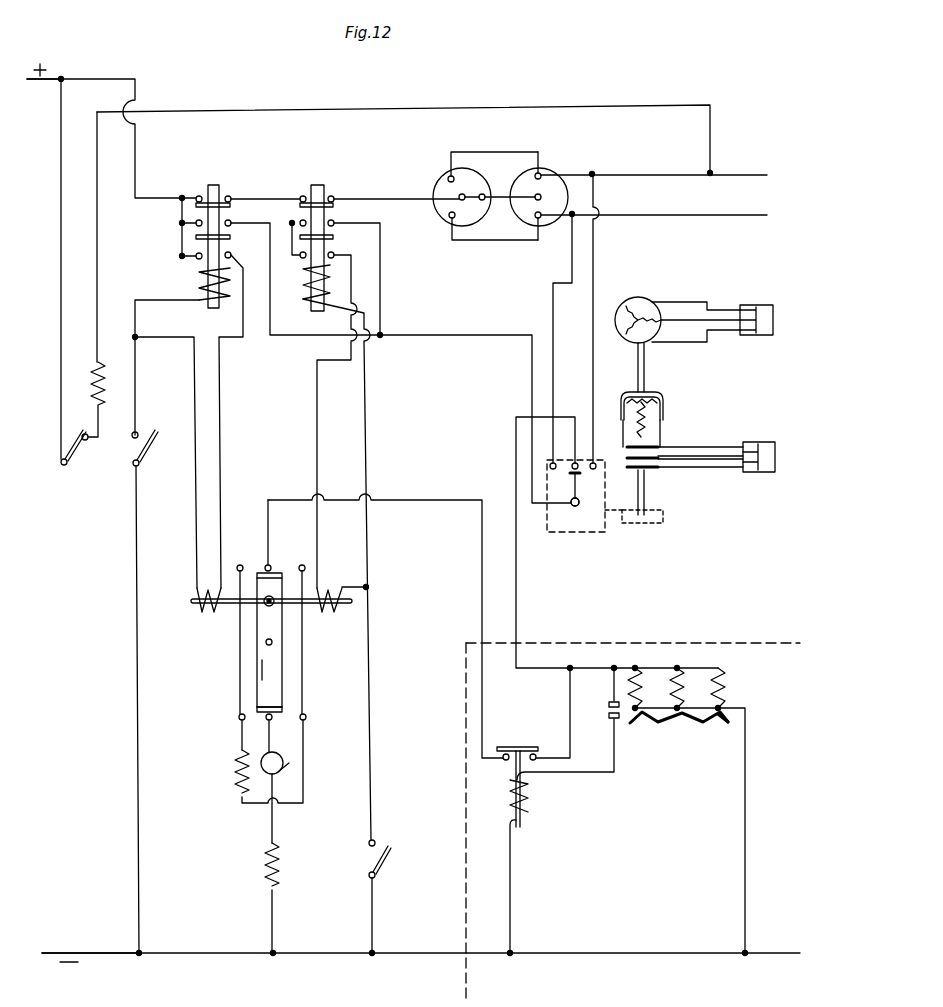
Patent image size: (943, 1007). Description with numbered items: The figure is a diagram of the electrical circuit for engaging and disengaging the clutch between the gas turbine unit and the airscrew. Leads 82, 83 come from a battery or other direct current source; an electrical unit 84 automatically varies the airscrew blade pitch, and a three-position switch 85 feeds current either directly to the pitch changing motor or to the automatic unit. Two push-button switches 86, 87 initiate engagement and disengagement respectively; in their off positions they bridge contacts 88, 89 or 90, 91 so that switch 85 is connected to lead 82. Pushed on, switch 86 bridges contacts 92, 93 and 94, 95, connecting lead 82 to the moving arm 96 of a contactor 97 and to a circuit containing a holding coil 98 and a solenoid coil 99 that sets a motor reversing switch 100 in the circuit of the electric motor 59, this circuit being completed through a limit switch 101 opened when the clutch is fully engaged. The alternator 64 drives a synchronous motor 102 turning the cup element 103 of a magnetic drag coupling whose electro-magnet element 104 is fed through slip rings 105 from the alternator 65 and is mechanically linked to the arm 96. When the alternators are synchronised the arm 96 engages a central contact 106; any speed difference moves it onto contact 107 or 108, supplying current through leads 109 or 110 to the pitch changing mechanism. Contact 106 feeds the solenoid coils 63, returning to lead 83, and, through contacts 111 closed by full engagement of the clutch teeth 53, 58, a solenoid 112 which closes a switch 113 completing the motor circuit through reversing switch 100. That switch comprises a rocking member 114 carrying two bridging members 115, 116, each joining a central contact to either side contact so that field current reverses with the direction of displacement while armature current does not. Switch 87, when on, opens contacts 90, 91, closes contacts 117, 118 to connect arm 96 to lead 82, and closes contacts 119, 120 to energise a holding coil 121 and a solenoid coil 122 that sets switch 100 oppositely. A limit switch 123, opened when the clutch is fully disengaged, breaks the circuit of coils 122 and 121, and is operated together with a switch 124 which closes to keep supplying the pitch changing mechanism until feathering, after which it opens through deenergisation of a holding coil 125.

The lead 82 is at (48, 80).
The lead 83 is at (105, 953).
The electrical unit 84 is at (549, 167).
The switch 85 is at (446, 176).
The push-button switch 86 is at (319, 183).
The push-button switch 87 is at (214, 183).
The contact 88 is at (303, 196).
The contact 89 is at (333, 196).
The contact 90 is at (197, 196).
The contact 91 is at (230, 196).
The contact 92 is at (300, 222).
The contact 93 is at (334, 222).
The contact 94 is at (302, 258).
The contact 95 is at (334, 253).
The moving arm 96 is at (582, 494).
The contactor 97 is at (557, 524).
The holding coil 98 is at (328, 272).
The solenoid coil 99 is at (330, 590).
The motor reversing switch 100 is at (316, 678).
The limit switch 101 is at (384, 855).
The synchronous motor 102 is at (650, 300).
The cup element 103 is at (663, 405).
The electro-magnet element 104 is at (648, 420).
The slip rings 105 is at (650, 473).
The central contact 106 is at (575, 461).
The contact 107 is at (548, 466).
The contact 108 is at (596, 470).
The lead 109 is at (552, 298).
The lead 110 is at (596, 287).
The contacts 111 is at (612, 718).
The solenoid 112 is at (524, 812).
The switch 113 is at (522, 747).
The rocking member 114 is at (262, 668).
The bridging member 115 is at (281, 573).
The bridging member 116 is at (280, 703).
The contact 117 is at (196, 222).
The contact 118 is at (231, 222).
The contact 119 is at (196, 258).
The contact 120 is at (231, 253).
The holding coil 121 is at (206, 290).
The solenoid coil 122 is at (205, 592).
The limit switch 123 is at (170, 425).
The switch 124 is at (80, 450).
The holding coil 125 is at (104, 380).
The teeth 53 is at (705, 717).
The teeth 58 is at (720, 724).
The electric motor 59 is at (230, 773).
The solenoid coils 63 is at (707, 680).
The alternator 64 is at (750, 305).
The alternator 65 is at (762, 473).